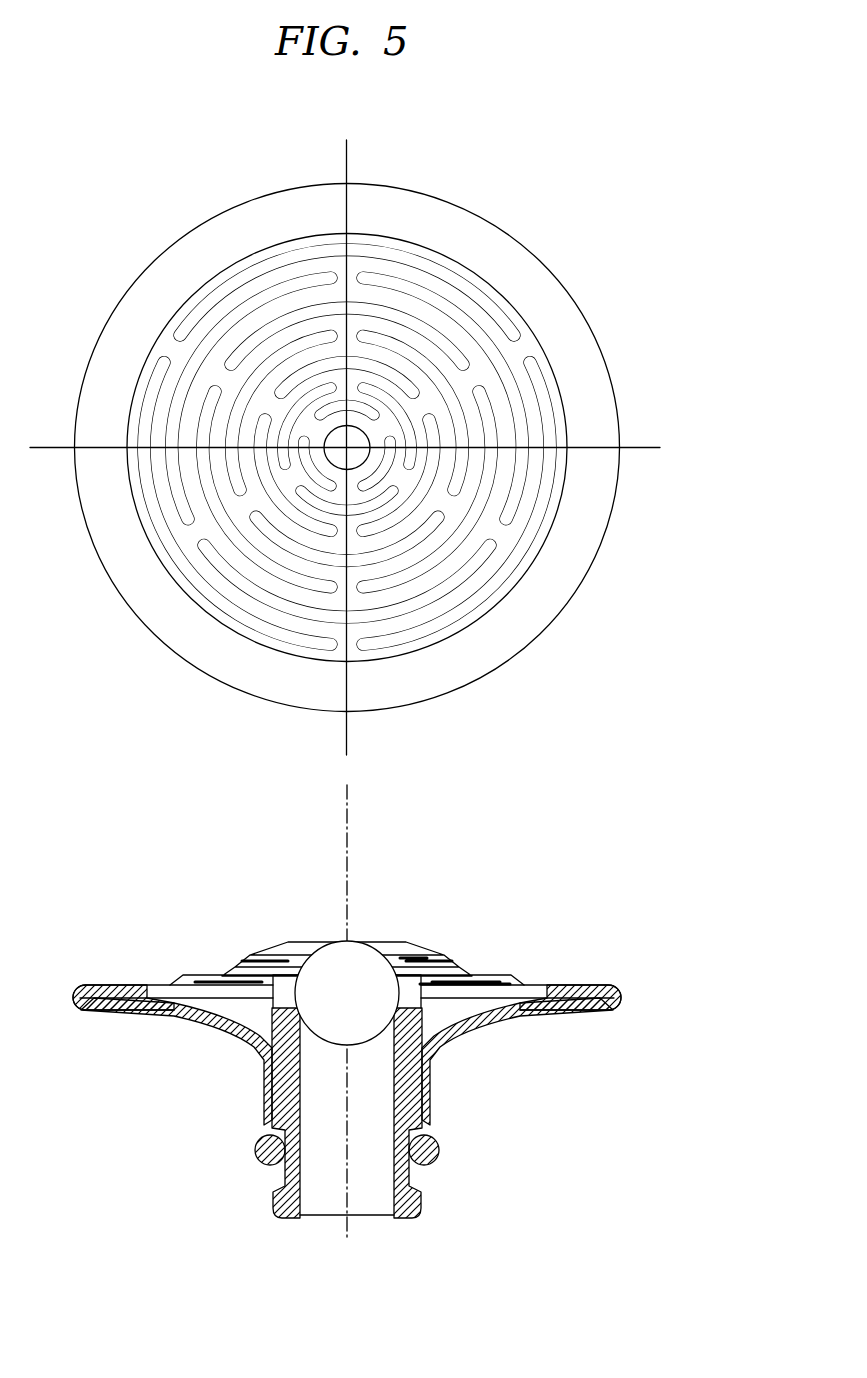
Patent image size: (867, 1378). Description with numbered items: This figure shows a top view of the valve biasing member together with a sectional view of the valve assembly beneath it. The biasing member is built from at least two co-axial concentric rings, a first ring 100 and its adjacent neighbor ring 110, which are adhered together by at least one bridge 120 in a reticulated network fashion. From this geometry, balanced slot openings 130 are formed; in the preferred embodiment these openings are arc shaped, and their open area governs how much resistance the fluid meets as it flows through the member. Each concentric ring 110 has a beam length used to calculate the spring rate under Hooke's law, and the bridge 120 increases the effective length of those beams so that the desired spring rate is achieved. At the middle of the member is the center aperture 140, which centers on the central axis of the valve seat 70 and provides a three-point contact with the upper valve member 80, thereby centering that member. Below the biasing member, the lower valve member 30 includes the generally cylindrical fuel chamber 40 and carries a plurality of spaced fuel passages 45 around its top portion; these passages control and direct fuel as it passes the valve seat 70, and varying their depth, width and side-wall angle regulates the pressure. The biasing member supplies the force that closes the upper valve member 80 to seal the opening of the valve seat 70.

The lower valve member 30 is at (418, 1211).
The fuel chamber 40 is at (365, 1200).
The fuel passages 45 is at (418, 988).
The valve seat 70 is at (430, 1037).
The upper valve member 80 is at (355, 957).
The first ring 100 is at (366, 412).
The concentric ring 110 is at (383, 434).
The bridge 120 is at (379, 425).
The balanced slot openings 130 is at (376, 470).
The center aperture 140 is at (336, 463).